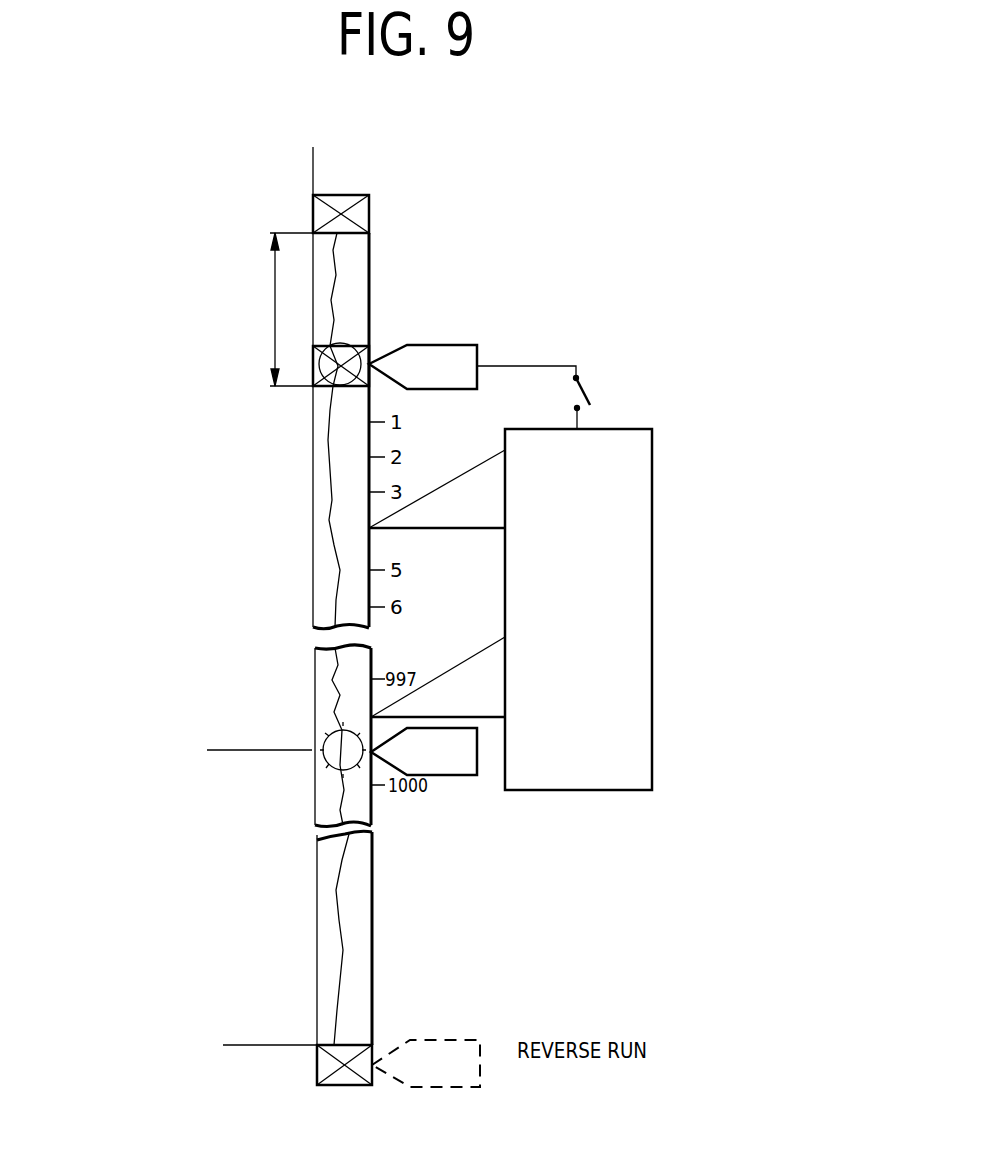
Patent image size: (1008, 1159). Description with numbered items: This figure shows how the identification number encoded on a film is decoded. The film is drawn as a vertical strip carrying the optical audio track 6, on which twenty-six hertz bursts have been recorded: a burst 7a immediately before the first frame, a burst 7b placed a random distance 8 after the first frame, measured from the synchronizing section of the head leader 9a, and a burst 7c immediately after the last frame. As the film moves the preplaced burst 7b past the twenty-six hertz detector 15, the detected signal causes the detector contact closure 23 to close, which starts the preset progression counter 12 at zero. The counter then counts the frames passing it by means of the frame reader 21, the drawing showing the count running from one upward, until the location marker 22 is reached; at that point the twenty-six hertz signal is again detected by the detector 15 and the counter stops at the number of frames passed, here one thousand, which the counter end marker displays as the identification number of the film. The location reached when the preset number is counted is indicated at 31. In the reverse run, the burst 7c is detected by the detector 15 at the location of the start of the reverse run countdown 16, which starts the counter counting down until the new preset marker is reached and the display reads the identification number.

The optical audio track 6 is at (325, 486).
The 26 Hz burst before first frame 7a is at (315, 218).
The 26 Hz burst random distance after first frame 7b is at (352, 352).
The 26 Hz burst after last frame 7c is at (327, 1067).
The random distance of 7b from 9a 8 is at (275, 290).
The synchronizing section of head leader 9a is at (312, 169).
The preset progression counter 12 is at (652, 518).
The 26 Hz detector 15 is at (450, 345).
The location of start of reverse run countdown 16 is at (265, 1045).
The frame reader 21 is at (475, 470).
The location marker 22 is at (332, 385).
The 26 Hz detector contact closure 23 is at (590, 392).
The location of marker when preset number is reached 31 is at (263, 752).